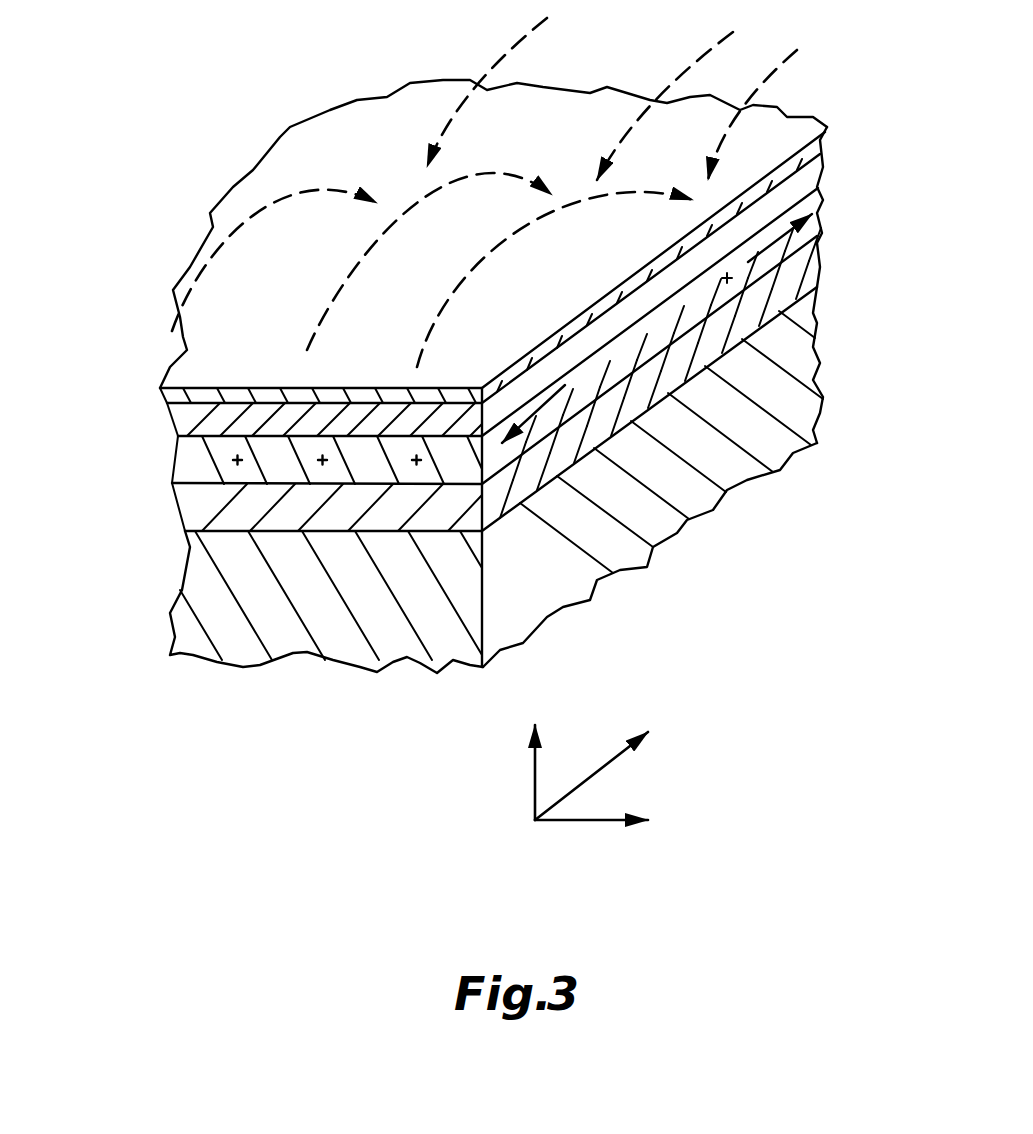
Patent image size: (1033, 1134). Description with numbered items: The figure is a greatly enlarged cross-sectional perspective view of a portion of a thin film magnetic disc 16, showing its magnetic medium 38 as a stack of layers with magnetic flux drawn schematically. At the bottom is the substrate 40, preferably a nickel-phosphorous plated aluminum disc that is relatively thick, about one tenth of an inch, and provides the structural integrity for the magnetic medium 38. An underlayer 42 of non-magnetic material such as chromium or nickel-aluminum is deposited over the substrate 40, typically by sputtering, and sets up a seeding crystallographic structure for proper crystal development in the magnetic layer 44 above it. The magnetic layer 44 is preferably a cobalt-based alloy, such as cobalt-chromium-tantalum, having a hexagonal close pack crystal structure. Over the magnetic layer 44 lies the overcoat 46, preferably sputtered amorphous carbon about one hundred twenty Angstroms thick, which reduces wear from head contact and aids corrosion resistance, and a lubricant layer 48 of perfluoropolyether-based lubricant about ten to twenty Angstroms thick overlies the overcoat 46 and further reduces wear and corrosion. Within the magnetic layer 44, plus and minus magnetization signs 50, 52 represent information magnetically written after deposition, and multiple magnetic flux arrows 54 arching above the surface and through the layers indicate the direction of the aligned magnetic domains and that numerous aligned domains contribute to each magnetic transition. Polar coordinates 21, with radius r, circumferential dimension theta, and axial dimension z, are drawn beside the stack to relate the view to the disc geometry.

The disc 16 is at (121, 218).
The polar coordinates 21 is at (533, 770).
The magnetic medium 38 is at (201, 163).
The substrate 40 is at (247, 643).
The underlayer 42 is at (200, 511).
The magnetic layer 44 is at (180, 447).
The overcoat 46 is at (170, 410).
The lubricant layer 48 is at (188, 392).
The + magnetization sign 50 is at (232, 460).
The − magnetization sign 52 is at (727, 278).
The magnetic flux arrows 54 is at (507, 50).